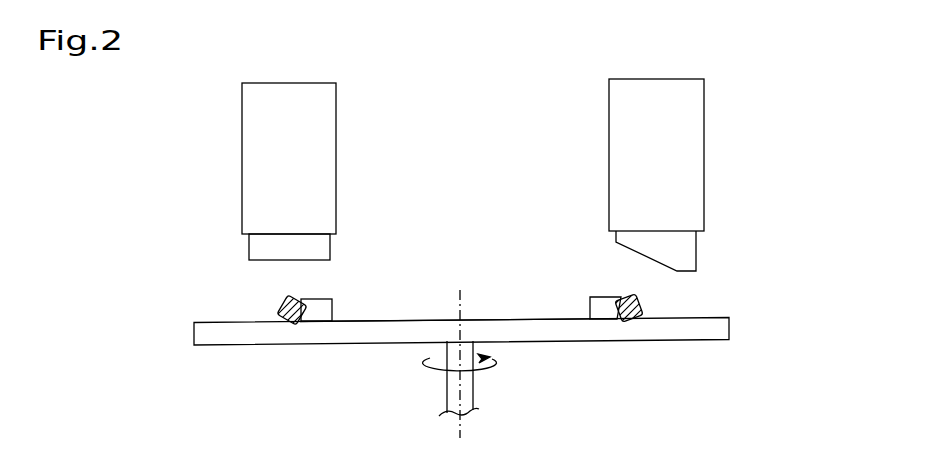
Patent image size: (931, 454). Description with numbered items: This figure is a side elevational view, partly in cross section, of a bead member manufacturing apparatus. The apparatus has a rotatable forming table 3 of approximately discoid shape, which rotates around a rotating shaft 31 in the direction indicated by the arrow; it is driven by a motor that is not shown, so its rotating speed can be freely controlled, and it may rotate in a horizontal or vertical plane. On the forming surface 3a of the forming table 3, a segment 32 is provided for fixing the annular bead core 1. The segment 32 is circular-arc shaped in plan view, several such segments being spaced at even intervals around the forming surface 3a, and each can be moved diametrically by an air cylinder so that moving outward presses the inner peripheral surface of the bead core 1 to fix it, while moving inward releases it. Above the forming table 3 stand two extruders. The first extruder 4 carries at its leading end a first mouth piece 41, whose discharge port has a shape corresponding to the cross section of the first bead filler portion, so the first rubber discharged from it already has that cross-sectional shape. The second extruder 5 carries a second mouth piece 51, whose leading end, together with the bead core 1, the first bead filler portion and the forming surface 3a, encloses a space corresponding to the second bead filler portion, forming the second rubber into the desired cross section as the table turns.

The bead core 1 is at (630, 297).
The forming table 3 is at (765, 333).
The forming surface 3a is at (525, 320).
The rotating shaft 31 is at (478, 378).
The segment 32 is at (603, 296).
The first extruder 4 is at (227, 197).
The first mouth piece 41 is at (248, 248).
The second extruder 5 is at (714, 192).
The second mouth piece 51 is at (697, 242).